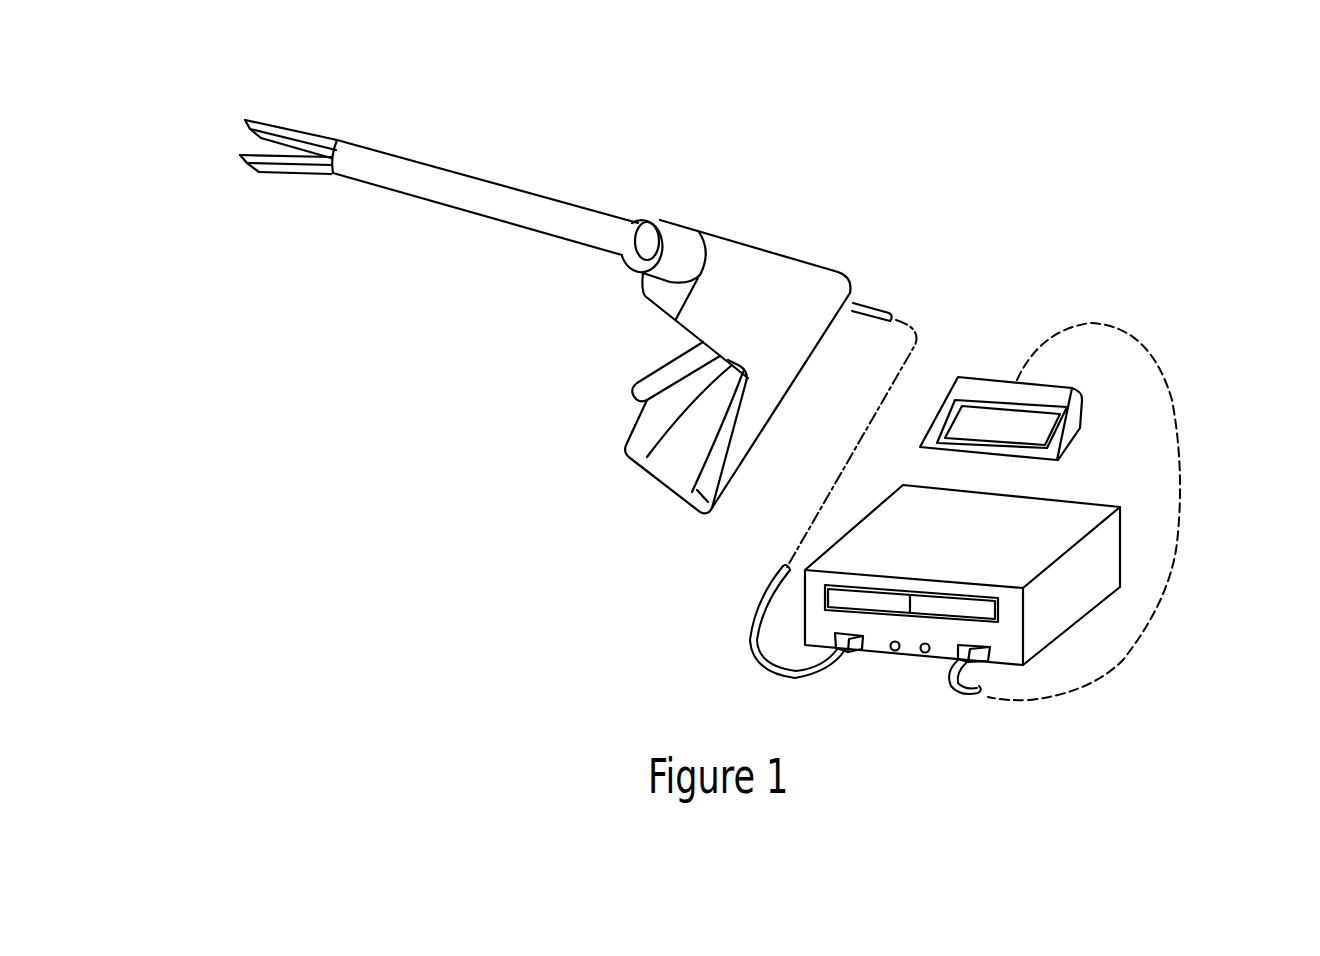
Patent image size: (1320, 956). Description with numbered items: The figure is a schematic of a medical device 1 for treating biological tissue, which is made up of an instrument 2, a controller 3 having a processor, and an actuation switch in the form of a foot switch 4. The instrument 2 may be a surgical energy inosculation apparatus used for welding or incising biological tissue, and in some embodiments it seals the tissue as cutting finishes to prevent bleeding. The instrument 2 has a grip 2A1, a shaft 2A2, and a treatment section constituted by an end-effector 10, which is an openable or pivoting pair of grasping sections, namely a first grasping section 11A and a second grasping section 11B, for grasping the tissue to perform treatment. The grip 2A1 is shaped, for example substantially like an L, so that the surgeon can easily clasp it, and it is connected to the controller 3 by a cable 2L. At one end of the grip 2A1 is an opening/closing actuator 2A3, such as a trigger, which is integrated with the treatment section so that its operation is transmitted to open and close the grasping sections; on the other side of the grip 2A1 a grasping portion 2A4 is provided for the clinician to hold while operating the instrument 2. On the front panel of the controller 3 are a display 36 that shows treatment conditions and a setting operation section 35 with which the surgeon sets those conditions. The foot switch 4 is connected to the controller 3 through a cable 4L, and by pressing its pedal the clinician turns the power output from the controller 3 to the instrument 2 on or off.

The medical device 1 is at (925, 170).
The instrument 2 is at (607, 187).
The grip 2A1 is at (780, 256).
The shaft 2A2 is at (497, 187).
The opening/closing actuator 2A3 is at (653, 373).
The grasping portion 2A4 is at (737, 477).
The cable 2L is at (800, 533).
The controller 3 is at (1100, 503).
The setting operation section 35 is at (898, 653).
The display 36 is at (865, 611).
The foot switch 4 is at (990, 378).
The cable 4L is at (1183, 455).
The end-effector 10 is at (201, 77).
The first grasping section 11A is at (297, 130).
The second grasping section 11B is at (282, 172).